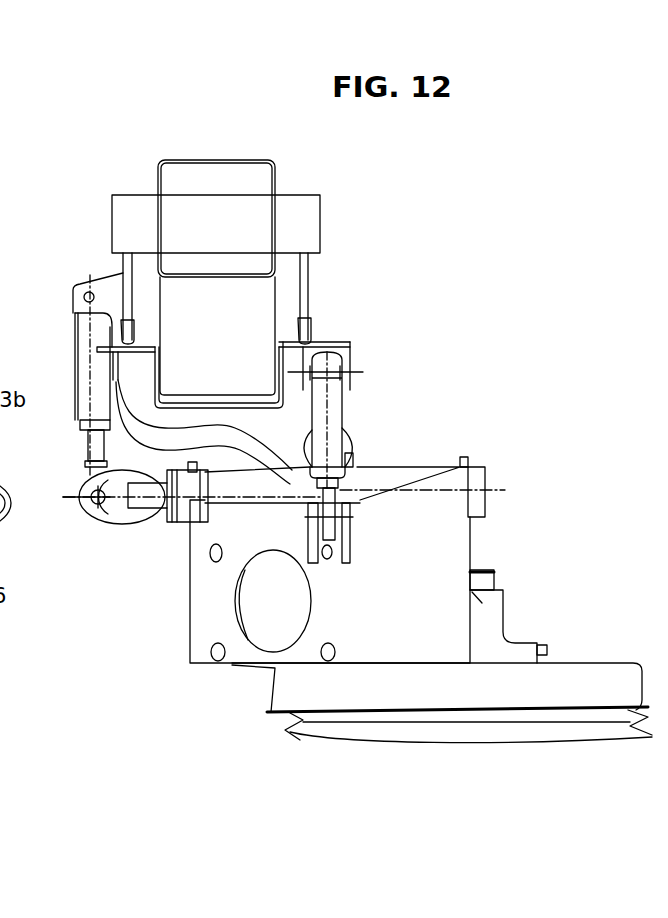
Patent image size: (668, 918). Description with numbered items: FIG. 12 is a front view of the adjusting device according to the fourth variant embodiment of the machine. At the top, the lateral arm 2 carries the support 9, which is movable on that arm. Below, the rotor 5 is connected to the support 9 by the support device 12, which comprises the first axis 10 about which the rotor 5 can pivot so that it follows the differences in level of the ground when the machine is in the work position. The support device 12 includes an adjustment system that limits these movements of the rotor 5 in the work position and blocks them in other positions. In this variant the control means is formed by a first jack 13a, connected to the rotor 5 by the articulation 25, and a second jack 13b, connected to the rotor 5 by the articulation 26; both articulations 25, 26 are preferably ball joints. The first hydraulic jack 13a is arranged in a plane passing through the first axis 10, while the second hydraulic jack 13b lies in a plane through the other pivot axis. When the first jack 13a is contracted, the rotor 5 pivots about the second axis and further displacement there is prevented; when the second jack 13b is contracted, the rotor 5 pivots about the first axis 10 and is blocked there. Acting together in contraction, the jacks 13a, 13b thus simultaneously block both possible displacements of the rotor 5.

The lateral arm 2 is at (197, 175).
The support 9 is at (308, 221).
The first jack 13a is at (85, 337).
The second jack 13b is at (337, 402).
The first axis 10 is at (497, 490).
The articulation 25 is at (87, 513).
The support device 12 is at (122, 550).
The articulation 26 is at (331, 533).
The rotor 5 is at (553, 720).